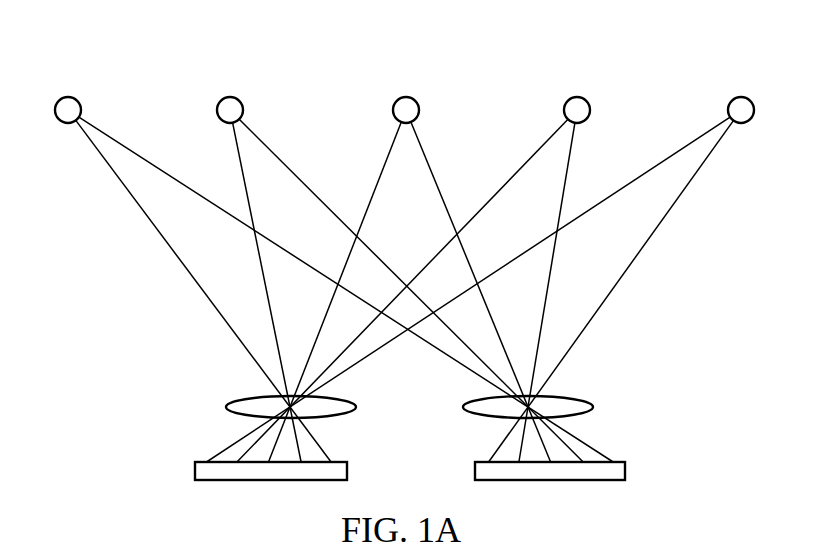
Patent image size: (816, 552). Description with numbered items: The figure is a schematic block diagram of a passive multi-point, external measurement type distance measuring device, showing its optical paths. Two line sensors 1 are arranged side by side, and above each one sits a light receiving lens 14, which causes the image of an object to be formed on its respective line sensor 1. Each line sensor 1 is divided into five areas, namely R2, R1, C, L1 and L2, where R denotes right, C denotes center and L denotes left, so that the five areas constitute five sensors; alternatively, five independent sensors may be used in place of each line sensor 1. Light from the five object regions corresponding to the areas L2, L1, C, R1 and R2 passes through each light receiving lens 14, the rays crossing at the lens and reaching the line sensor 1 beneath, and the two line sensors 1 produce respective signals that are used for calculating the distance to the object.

The light receiving lens 14 is at (357, 407).
The line sensor 1 is at (347, 471).
The left sensor area L2 is at (69, 95).
The left sensor area L1 is at (230, 95).
The center sensor area C is at (406, 95).
The right sensor area R1 is at (578, 95).
The right sensor area R2 is at (741, 95).